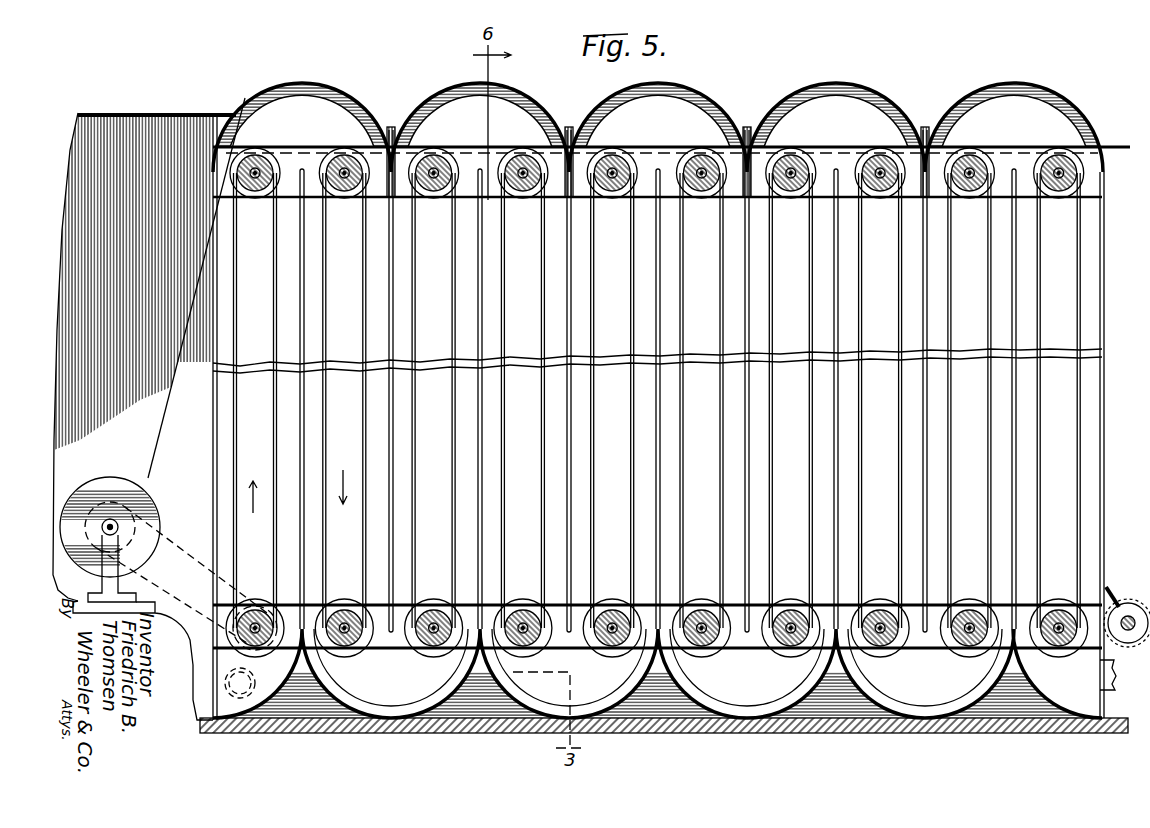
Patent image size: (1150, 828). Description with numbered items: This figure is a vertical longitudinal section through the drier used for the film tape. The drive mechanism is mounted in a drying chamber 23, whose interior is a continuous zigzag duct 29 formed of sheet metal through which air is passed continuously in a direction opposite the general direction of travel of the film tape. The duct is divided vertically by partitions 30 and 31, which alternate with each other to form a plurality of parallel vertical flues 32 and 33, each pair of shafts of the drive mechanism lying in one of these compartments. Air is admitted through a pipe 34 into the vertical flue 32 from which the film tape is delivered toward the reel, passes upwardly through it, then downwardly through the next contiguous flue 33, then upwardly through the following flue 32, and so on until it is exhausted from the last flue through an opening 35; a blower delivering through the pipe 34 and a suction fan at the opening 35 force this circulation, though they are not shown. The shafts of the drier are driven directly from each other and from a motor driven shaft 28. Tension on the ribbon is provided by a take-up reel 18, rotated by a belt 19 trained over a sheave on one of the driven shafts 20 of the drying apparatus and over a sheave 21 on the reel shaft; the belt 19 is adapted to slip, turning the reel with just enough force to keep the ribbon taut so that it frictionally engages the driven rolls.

The take-up reel 18 is at (91, 555).
The belt 19 is at (191, 637).
The driven shaft 20 is at (243, 642).
The sheave 21 is at (118, 518).
The drying chamber 23 is at (690, 733).
The motor driven shaft 28 is at (1128, 618).
The duct 29 is at (1093, 526).
The partition 30 is at (303, 544).
The partition 31 is at (390, 544).
The vertical flue 32 is at (226, 487).
The vertical flue 33 is at (394, 464).
The pipe 34 is at (238, 685).
The opening 35 is at (1108, 688).